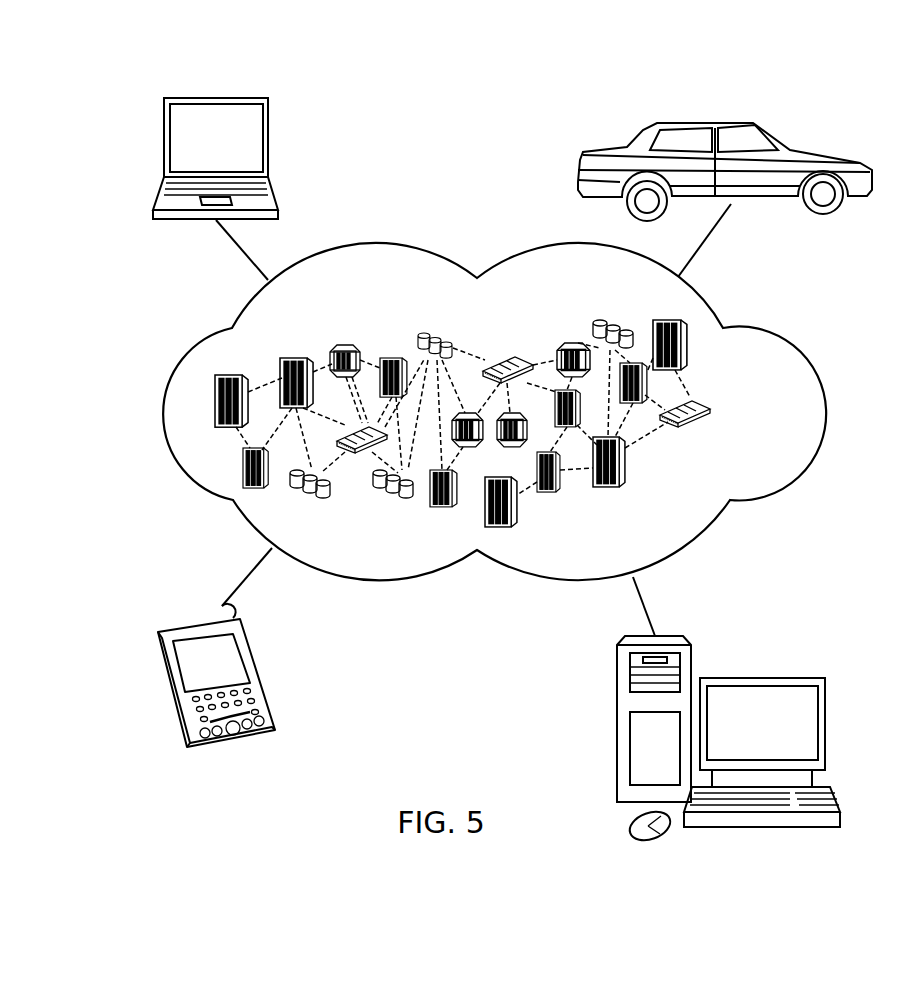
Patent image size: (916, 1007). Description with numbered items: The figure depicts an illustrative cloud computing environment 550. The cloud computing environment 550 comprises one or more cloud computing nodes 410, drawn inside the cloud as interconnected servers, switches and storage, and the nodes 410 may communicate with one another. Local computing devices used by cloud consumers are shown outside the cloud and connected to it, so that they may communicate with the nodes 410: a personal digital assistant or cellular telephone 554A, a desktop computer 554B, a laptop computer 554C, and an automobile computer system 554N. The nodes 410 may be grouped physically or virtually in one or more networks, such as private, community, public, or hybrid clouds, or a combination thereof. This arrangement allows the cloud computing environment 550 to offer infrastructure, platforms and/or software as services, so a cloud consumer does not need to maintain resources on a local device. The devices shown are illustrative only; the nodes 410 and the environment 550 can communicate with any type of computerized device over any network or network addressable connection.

The cloud computing environment 550 is at (494, 420).
The cloud computing node 410 is at (718, 412).
The personal digital assistant or cellular telephone 554A is at (199, 625).
The desktop computer 554B is at (762, 677).
The laptop computer 554C is at (216, 97).
The automobile computer system 554N is at (706, 120).